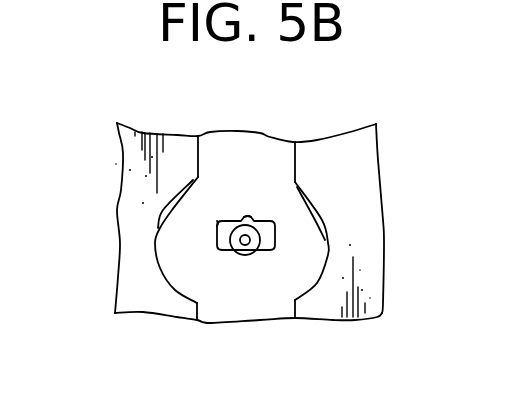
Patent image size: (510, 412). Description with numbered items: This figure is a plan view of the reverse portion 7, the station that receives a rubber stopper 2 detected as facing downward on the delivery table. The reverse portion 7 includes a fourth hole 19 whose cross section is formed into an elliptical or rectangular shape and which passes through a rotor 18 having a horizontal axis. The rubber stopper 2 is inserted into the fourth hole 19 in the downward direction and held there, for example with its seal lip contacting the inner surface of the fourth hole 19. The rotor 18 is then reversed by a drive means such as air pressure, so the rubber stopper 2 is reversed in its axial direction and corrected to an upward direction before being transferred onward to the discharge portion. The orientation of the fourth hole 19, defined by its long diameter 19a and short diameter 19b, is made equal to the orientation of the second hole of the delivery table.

The reverse portion 7 is at (448, 211).
The rotor 18 is at (300, 258).
The fourth hole 19 is at (268, 228).
The long diameter 19a is at (217, 226).
The short diameter 19b is at (248, 219).
The rubber stopper 2 is at (257, 245).